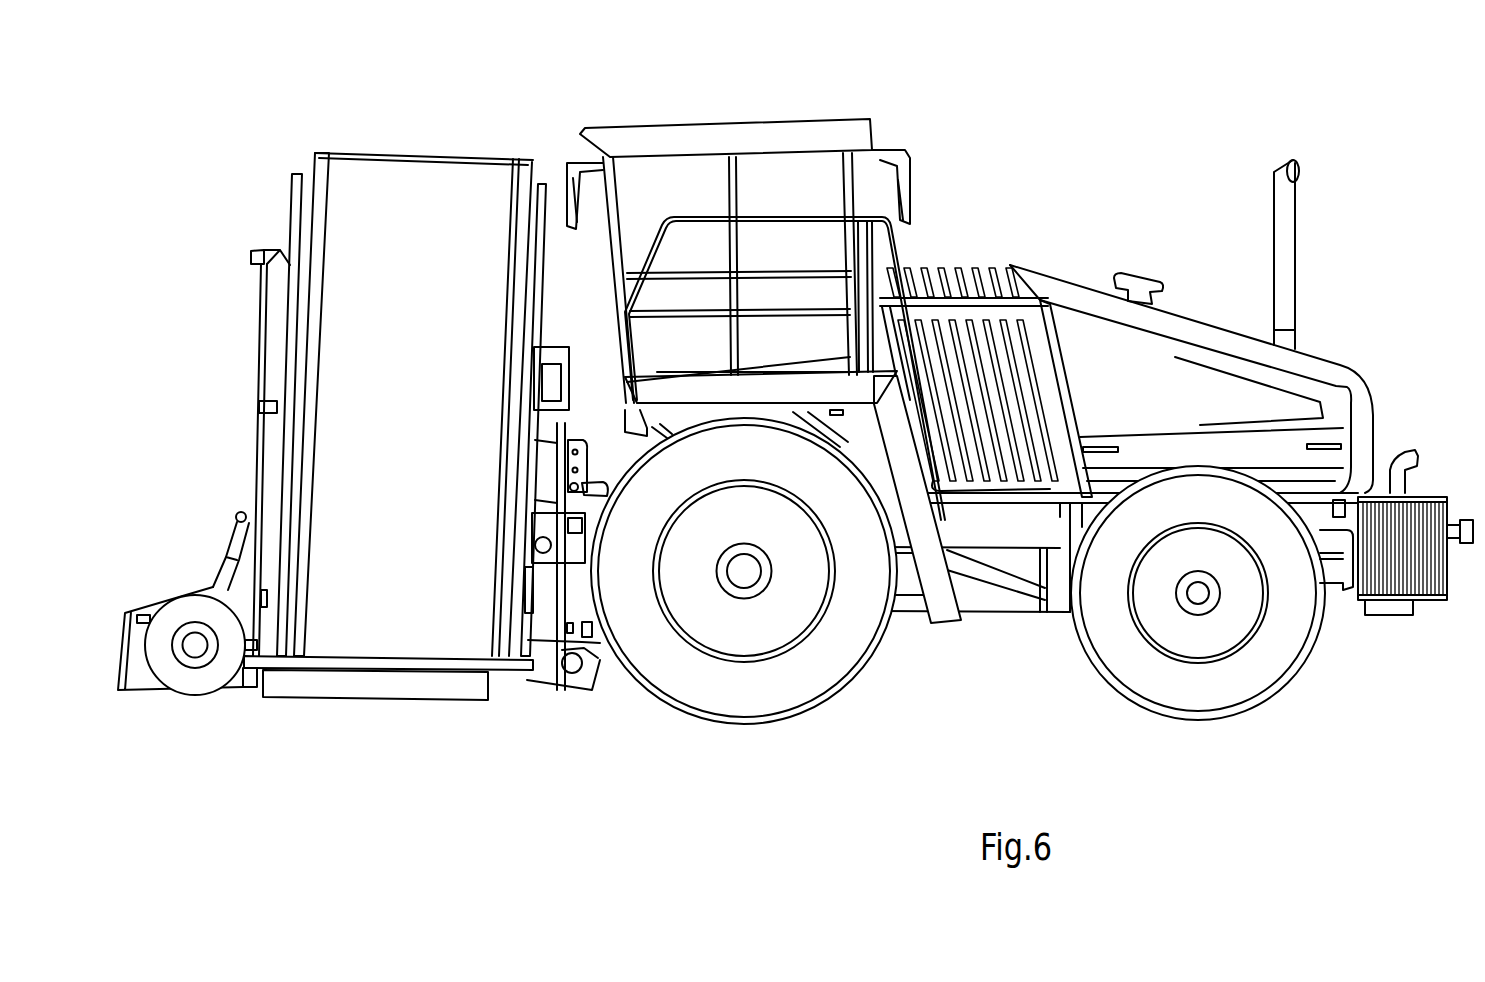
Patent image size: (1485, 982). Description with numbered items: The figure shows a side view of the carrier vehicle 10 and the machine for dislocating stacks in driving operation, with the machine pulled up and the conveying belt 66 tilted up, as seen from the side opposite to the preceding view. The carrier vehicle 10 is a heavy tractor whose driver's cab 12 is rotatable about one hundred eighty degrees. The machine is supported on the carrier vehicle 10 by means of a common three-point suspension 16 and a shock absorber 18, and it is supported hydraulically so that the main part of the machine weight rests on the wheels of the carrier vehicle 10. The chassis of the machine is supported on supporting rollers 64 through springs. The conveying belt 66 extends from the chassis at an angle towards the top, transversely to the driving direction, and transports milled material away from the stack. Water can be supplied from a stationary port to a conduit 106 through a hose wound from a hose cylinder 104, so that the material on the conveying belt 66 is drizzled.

The carrier vehicle 10 is at (1103, 262).
The driver's cab 12 is at (757, 177).
The three-point suspension 16 is at (600, 662).
The shock absorber 18 is at (602, 495).
The supporting rollers 64 is at (223, 673).
The conveying belt 66 is at (402, 190).
The hose cylinder 104 is at (1433, 493).
The conduit 106 is at (1340, 590).